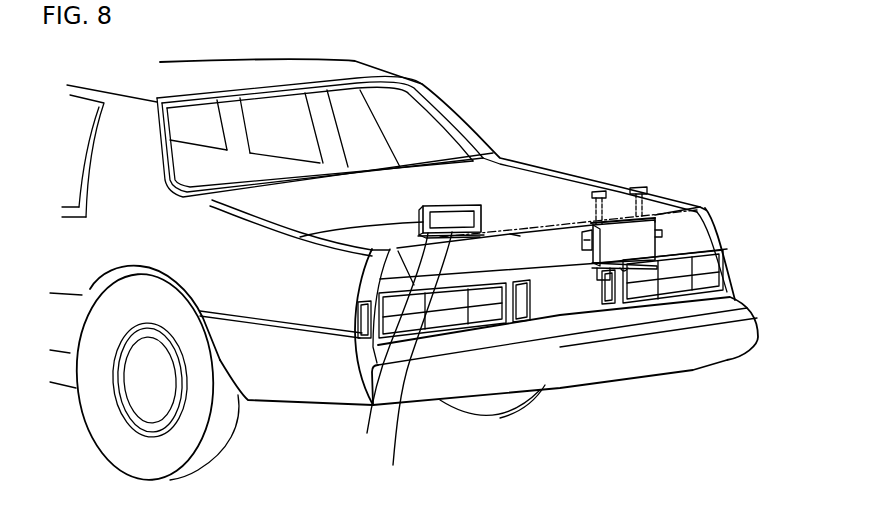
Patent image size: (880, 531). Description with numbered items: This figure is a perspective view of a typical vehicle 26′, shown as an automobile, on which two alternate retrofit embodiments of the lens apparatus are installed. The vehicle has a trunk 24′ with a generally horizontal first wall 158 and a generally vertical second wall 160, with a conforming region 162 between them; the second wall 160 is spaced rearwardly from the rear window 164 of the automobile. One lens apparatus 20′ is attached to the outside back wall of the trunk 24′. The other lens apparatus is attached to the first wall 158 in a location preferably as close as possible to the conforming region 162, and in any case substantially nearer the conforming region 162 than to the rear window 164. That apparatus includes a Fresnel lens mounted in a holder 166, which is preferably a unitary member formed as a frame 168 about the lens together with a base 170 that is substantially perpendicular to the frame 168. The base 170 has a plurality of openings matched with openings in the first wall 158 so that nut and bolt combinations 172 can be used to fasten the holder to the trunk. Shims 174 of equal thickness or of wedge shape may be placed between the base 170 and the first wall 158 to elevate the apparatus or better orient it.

The vehicle 26′ is at (358, 63).
The rear window 164 is at (423, 120).
The holder 166 is at (446, 200).
The trunk 24′ is at (558, 221).
The conforming region 162 is at (593, 193).
The lens apparatus 20′ is at (651, 216).
The first wall 158 is at (353, 208).
The frame 168 is at (332, 231).
The second wall 160 is at (510, 270).
The shims 174 is at (518, 237).
The nut and bolt combinations 172 is at (386, 350).
The base 170 is at (414, 361).